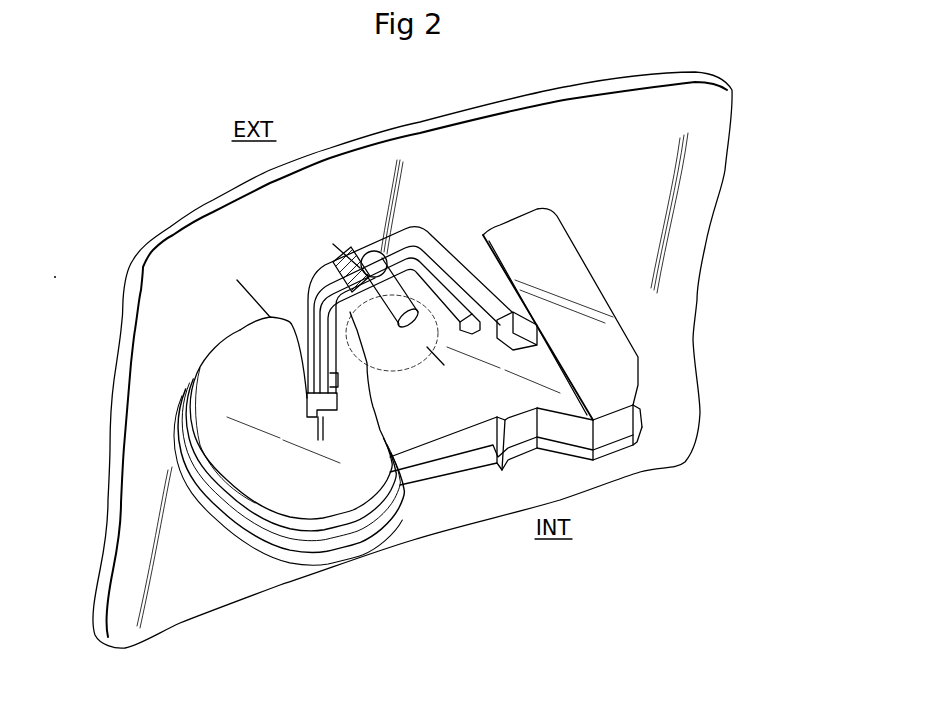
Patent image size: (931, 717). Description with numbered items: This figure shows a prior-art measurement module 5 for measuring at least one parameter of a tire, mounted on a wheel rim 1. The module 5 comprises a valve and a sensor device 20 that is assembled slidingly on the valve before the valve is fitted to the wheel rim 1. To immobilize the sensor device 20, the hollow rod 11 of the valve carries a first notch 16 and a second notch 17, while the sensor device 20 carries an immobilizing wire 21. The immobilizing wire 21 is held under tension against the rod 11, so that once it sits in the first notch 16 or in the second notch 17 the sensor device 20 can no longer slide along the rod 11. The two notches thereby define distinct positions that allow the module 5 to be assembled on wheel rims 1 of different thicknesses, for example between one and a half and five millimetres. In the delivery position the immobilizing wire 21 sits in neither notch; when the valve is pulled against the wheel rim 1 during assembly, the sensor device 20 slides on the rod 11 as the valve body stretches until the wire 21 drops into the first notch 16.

The wheel rim 1 is at (693, 340).
The module 5 is at (607, 267).
The hollow rod 11 is at (402, 500).
The first notch 16 is at (380, 292).
The second notch 17 is at (365, 270).
The sensor device 20 is at (247, 500).
The immobilizing wire 21 is at (308, 301).